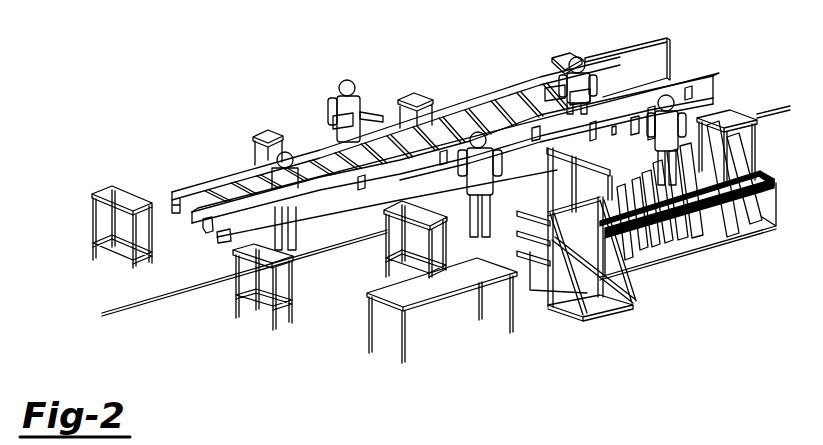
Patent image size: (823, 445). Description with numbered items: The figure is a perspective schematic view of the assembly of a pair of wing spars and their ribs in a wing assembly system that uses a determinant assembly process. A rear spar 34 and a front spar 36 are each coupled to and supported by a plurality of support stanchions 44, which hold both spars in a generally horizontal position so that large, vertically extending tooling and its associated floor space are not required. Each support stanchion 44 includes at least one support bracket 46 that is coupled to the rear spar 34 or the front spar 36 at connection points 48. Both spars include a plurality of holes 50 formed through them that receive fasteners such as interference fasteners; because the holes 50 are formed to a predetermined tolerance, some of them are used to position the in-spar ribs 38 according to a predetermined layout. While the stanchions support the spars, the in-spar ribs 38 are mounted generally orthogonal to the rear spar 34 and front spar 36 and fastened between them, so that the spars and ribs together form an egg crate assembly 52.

The rear spar 34 is at (710, 92).
The front spar 36 is at (658, 63).
The in-spar ribs 38 is at (523, 100).
The support stanchions 44 is at (294, 303).
The support bracket 46 is at (218, 239).
The connection points 48 is at (203, 226).
The holes 50 is at (323, 152).
The egg crate assembly 52 is at (440, 74).